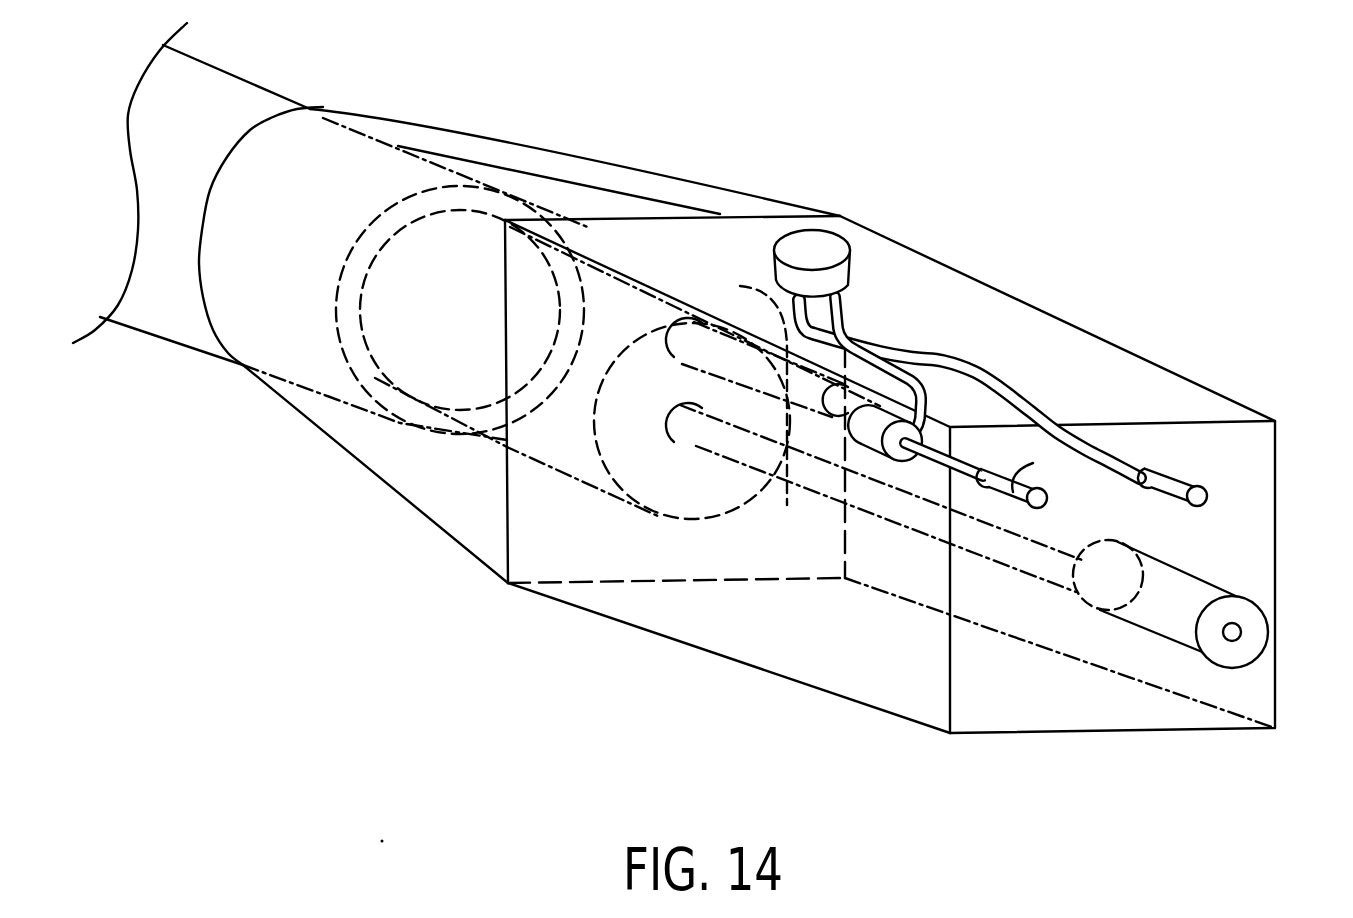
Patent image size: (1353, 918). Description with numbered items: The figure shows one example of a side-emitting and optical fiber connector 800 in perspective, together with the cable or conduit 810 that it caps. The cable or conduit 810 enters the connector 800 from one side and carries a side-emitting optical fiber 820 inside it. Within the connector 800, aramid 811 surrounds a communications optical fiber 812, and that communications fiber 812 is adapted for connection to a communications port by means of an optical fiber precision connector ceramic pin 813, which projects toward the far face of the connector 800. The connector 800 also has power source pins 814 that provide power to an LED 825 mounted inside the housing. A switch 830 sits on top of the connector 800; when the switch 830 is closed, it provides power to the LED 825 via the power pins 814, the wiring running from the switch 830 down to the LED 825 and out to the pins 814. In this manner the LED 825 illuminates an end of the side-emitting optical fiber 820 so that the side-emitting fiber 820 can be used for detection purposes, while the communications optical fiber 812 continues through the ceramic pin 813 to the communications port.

The side-emitting and optical fiber connector 800 is at (767, 670).
The cable or conduit 810 is at (163, 317).
The aramid 811 is at (690, 497).
The communications optical fiber 812 is at (1247, 633).
The optical fiber precision connector ceramic pin 813 is at (1182, 583).
The power source pins 814 is at (1177, 487).
The side-emitting optical fiber 820 is at (748, 287).
The LED 825 is at (860, 430).
The switch 830 is at (830, 250).